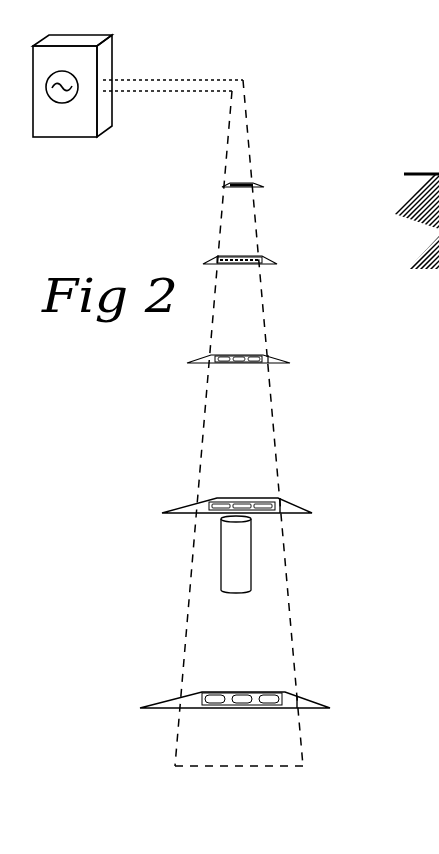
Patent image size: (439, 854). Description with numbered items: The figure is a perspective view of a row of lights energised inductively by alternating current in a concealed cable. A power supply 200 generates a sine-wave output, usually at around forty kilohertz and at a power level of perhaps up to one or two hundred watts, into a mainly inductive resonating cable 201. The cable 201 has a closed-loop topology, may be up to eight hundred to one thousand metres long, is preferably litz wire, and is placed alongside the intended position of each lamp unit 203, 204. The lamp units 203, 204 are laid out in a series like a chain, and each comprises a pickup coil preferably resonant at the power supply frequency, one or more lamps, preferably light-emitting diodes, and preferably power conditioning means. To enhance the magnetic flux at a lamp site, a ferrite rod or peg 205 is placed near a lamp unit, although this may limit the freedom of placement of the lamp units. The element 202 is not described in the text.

The power supply 200 is at (60, 137).
The resonating cable 201 is at (250, 142).
The image plane 202 is at (265, 767).
The lamp unit 203 is at (392, 685).
The lamp unit 204 is at (382, 488).
The ferrite rod or peg 205 is at (253, 578).